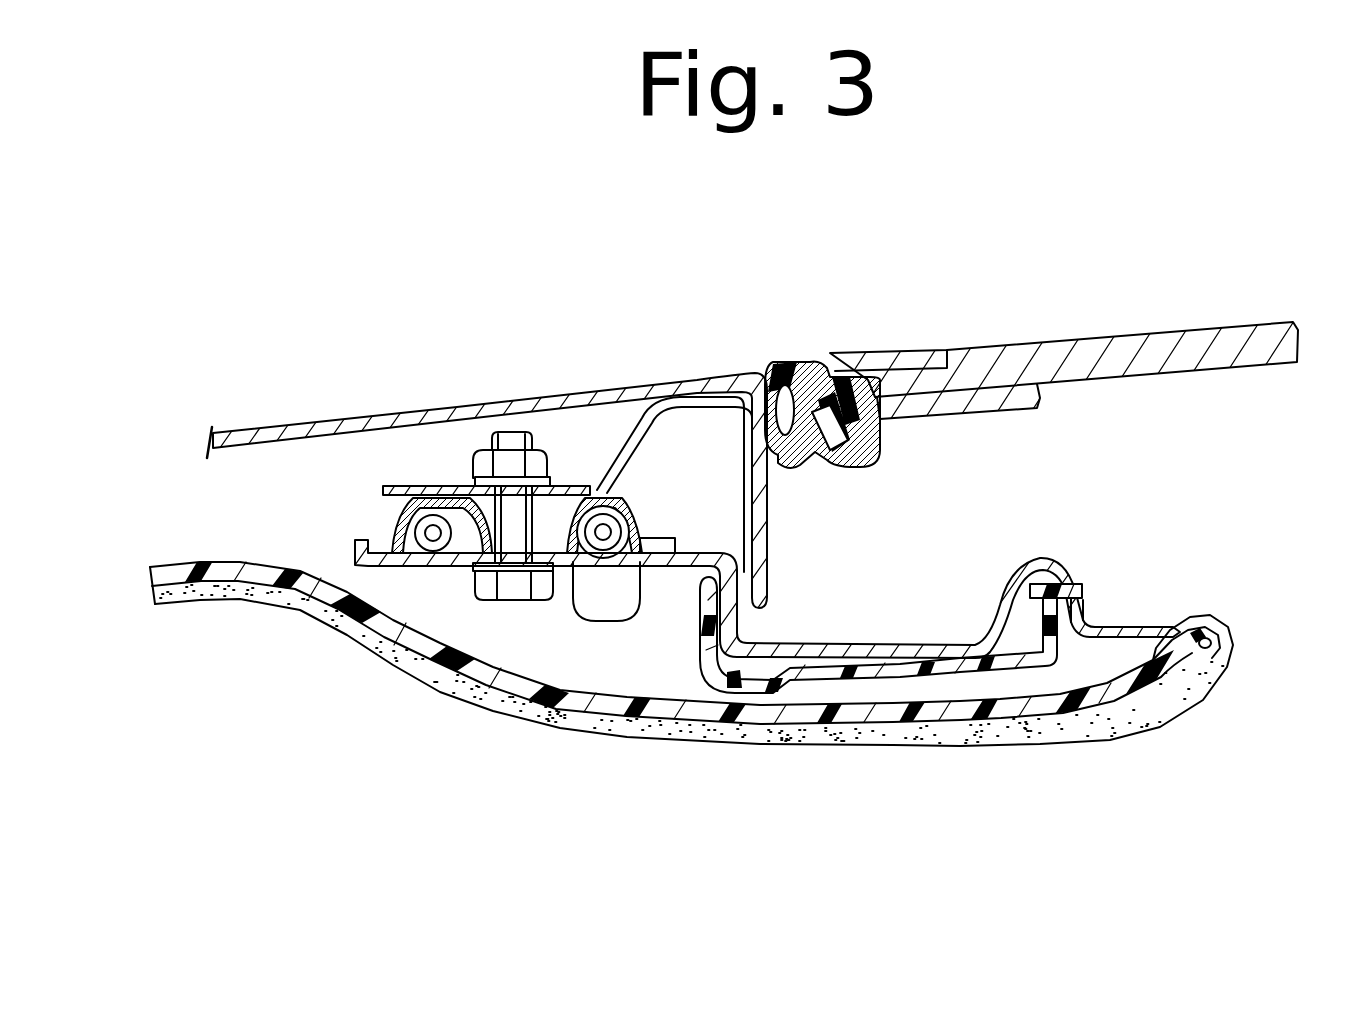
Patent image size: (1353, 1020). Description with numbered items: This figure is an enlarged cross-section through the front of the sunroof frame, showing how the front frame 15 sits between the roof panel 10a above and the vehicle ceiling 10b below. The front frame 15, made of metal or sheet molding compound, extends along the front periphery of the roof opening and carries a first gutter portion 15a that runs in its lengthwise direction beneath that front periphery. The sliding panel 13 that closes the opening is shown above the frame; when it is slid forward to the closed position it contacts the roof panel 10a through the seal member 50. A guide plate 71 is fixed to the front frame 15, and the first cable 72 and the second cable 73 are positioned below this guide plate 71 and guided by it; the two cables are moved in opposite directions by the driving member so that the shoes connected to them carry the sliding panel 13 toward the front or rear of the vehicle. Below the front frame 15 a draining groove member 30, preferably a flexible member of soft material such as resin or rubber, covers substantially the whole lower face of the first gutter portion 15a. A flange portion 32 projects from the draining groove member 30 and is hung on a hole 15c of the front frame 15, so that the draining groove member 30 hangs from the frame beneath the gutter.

The roof panel 10a is at (380, 412).
The vehicle ceiling 10b is at (877, 745).
The sliding panel 13 is at (1073, 343).
The front frame 15 is at (1140, 618).
The first gutter portion 15a is at (856, 643).
The hole 15c is at (1088, 603).
The draining groove member 30 is at (1003, 676).
The flange portion 32 is at (1083, 588).
The seal member 50 is at (798, 360).
The guide plate 71 is at (562, 490).
The first cable 72 is at (598, 545).
The second cable 73 is at (440, 525).